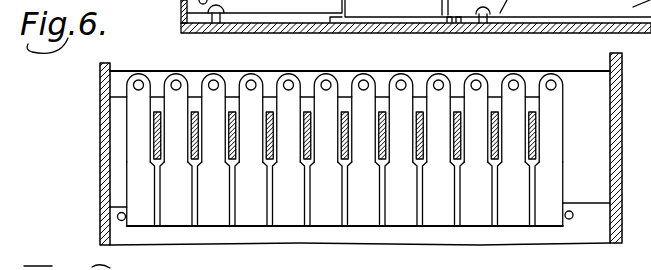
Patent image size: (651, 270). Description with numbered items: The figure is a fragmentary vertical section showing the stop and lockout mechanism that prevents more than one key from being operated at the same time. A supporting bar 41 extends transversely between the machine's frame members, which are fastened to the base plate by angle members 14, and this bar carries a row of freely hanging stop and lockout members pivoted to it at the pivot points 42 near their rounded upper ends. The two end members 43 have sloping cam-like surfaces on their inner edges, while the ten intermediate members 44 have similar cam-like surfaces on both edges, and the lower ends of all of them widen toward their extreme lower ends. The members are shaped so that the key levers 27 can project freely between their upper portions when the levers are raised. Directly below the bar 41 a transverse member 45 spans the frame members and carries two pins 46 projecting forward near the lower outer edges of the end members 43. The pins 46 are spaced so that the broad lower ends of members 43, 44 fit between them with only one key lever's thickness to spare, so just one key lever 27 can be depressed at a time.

The angle members 14 is at (281, 3).
The key levers 27 is at (196, 143).
The supporting bar 41 is at (530, 63).
The pivot hole 42 is at (141, 80).
The end stop and lockout members 43 is at (142, 186).
The intermediate stop and lockout members 44 is at (292, 213).
The transverse member 45 is at (582, 206).
The pins 46 is at (117, 216).